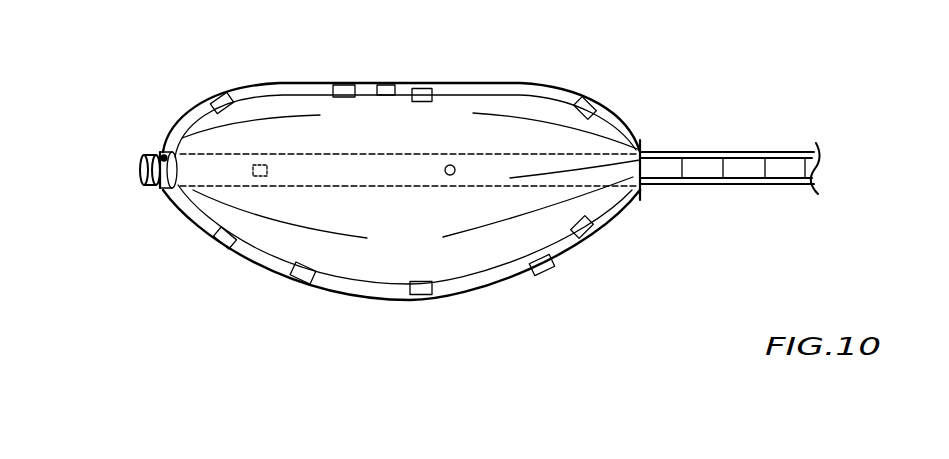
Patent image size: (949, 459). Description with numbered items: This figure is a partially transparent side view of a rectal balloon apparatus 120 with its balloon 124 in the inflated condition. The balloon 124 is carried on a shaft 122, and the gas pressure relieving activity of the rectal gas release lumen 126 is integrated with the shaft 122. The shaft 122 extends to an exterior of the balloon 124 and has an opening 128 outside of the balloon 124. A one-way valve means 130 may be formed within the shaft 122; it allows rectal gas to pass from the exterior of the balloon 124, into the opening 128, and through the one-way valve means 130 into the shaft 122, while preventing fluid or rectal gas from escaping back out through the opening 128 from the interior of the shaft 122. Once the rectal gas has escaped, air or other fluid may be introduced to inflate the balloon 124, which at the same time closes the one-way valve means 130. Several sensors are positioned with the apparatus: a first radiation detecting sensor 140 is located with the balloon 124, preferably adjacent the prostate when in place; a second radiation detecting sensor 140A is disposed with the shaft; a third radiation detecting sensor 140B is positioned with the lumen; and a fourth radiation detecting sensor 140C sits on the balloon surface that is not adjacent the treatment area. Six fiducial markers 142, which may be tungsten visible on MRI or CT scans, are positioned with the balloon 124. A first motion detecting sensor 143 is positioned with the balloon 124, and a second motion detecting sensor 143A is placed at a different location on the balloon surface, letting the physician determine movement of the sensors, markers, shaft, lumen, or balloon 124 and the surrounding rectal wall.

The rectal balloon apparatus 120 is at (660, 95).
The shaft 122 is at (482, 187).
The balloon 124 is at (561, 84).
The rectal gas release lumen 126 is at (288, 153).
The opening 128 is at (140, 155).
The one-way valve means 130 is at (161, 192).
The first radiation detecting sensor 140 is at (385, 84).
The second radiation detecting sensor 140A is at (256, 177).
The third radiation detecting sensor 140B is at (164, 155).
The fourth radiation detecting sensor 140C is at (303, 282).
The fiducial markers 142 is at (221, 93).
The first motion detecting sensor 143 is at (340, 85).
The second motion detecting sensor 143A is at (550, 270).